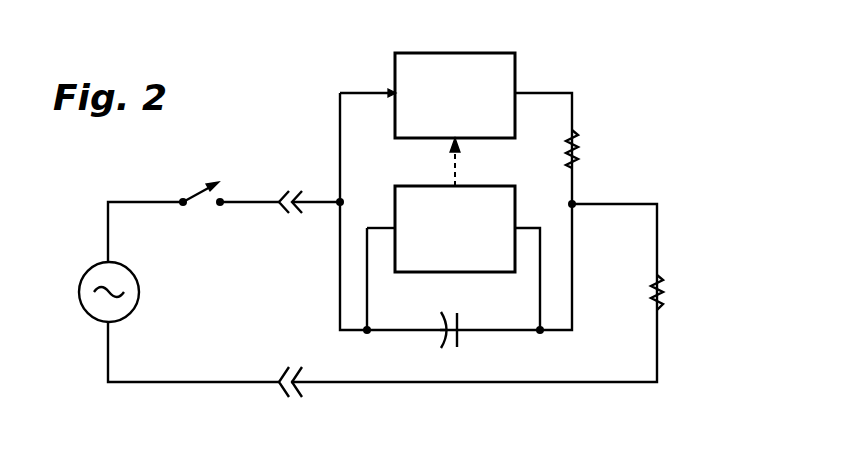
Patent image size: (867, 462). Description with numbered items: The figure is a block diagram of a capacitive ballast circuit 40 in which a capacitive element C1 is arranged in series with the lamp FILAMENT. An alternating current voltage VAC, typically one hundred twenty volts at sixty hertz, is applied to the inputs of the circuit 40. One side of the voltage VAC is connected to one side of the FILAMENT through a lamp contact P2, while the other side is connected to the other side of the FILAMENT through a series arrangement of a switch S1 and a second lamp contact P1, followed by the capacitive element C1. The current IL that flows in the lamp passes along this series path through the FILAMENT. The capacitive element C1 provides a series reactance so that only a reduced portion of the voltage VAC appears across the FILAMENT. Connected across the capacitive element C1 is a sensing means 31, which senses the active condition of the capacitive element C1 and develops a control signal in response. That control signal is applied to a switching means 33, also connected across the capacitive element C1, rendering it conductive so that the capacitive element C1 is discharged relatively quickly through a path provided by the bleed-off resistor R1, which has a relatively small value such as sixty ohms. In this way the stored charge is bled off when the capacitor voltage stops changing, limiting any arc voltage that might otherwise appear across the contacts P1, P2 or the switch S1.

The capacitive ballast circuit 40 is at (655, 89).
The switching means 33 is at (515, 53).
The sensing means 31 is at (515, 186).
The switch S1 is at (197, 195).
The A.C. voltage VAC is at (131, 271).
The contact P1 is at (290, 216).
The contact P2 is at (286, 397).
The bleed-off resistor R1 is at (582, 144).
The capacitive element C1 is at (462, 346).
The lamp current IL is at (339, 280).
The filament FILAMENT is at (712, 271).